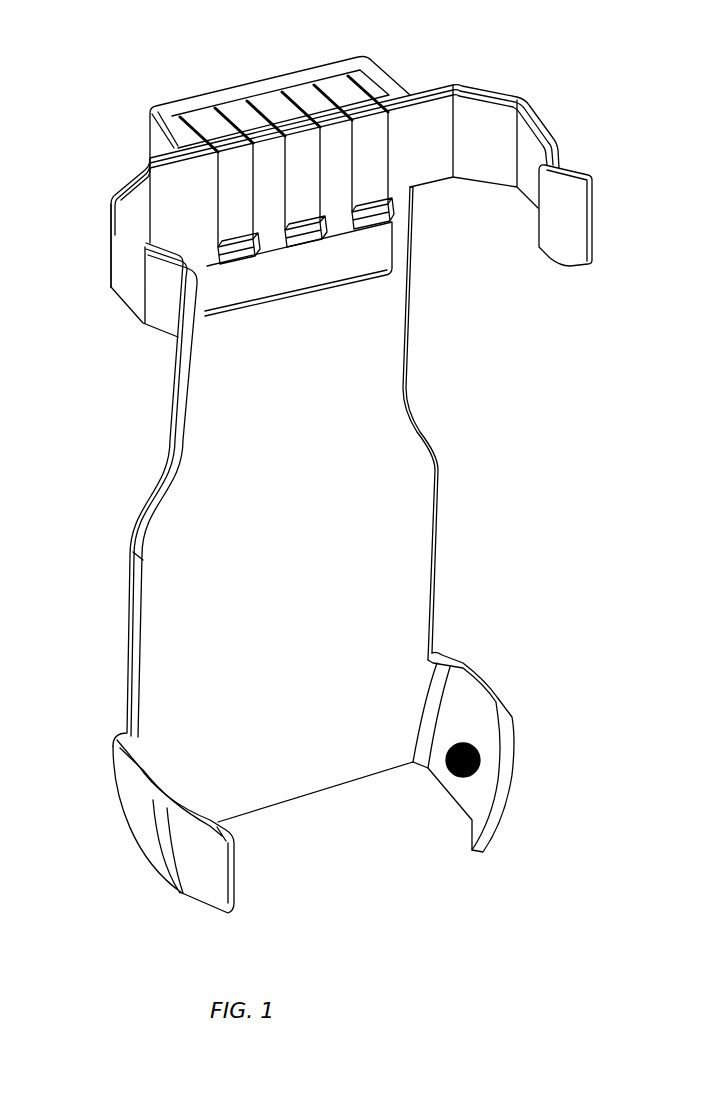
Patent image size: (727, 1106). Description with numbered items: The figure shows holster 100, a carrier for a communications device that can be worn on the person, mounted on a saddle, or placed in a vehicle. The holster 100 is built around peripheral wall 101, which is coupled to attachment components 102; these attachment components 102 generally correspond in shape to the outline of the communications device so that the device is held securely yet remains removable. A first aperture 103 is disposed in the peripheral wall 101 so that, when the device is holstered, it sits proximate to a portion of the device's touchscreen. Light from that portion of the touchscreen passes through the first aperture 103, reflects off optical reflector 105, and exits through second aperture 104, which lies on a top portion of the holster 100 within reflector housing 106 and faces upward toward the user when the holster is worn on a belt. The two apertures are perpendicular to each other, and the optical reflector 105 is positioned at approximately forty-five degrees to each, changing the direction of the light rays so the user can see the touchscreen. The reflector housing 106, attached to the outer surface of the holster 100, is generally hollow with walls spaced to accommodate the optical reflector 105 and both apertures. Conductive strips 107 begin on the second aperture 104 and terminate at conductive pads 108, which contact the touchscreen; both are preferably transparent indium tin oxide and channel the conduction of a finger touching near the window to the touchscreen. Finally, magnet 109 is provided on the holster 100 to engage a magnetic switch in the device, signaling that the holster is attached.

The holster 100 is at (100, 38).
The peripheral wall 101 is at (375, 452).
The attachment components 102 is at (162, 286).
The first aperture 103 is at (333, 287).
The second aperture 104 is at (245, 118).
The optical reflector 105 is at (230, 290).
The reflector housing 106 is at (153, 142).
The conductive strips 107 is at (370, 163).
The conductive pads 108 is at (377, 228).
The magnet 109 is at (452, 773).